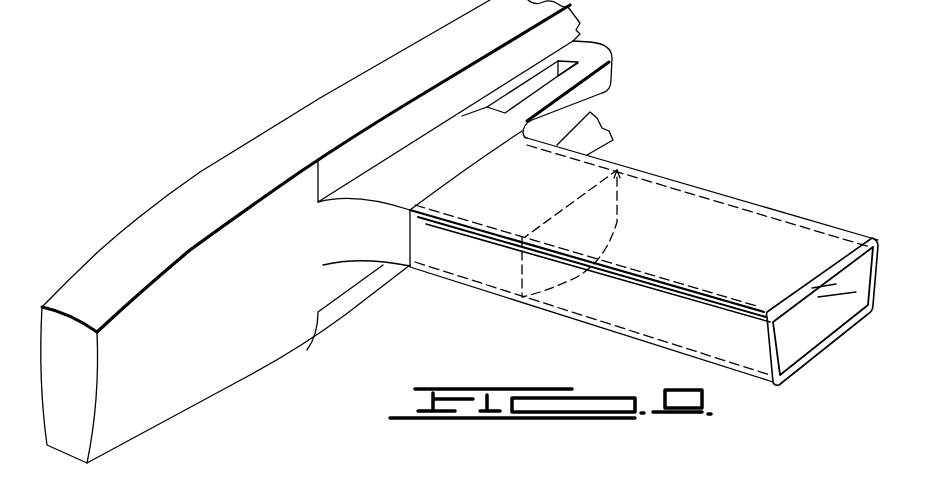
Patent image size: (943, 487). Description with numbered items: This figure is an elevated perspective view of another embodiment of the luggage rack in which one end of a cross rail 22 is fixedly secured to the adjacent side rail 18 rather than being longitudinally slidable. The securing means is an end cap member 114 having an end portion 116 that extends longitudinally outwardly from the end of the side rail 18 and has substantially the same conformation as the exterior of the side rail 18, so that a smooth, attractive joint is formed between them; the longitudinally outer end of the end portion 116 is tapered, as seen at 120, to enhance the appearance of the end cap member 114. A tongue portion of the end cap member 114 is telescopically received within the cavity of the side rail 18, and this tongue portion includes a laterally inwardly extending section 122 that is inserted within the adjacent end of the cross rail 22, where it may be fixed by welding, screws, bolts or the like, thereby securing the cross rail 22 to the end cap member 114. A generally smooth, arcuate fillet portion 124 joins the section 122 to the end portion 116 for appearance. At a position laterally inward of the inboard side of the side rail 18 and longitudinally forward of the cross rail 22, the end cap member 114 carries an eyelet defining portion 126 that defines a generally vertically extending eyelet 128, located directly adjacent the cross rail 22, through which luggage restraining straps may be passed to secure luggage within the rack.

The side rail 18 is at (350, 88).
The cross rail 22 is at (676, 181).
The end cap member 114 is at (138, 218).
The end portion 116 is at (157, 400).
The tapered outer end 120 is at (97, 278).
The laterally inwardly extending section 122 is at (580, 228).
The arcuate fillet portion 124 is at (370, 240).
The eyelet defining portion 126 is at (600, 64).
The eyelet 128 is at (542, 80).